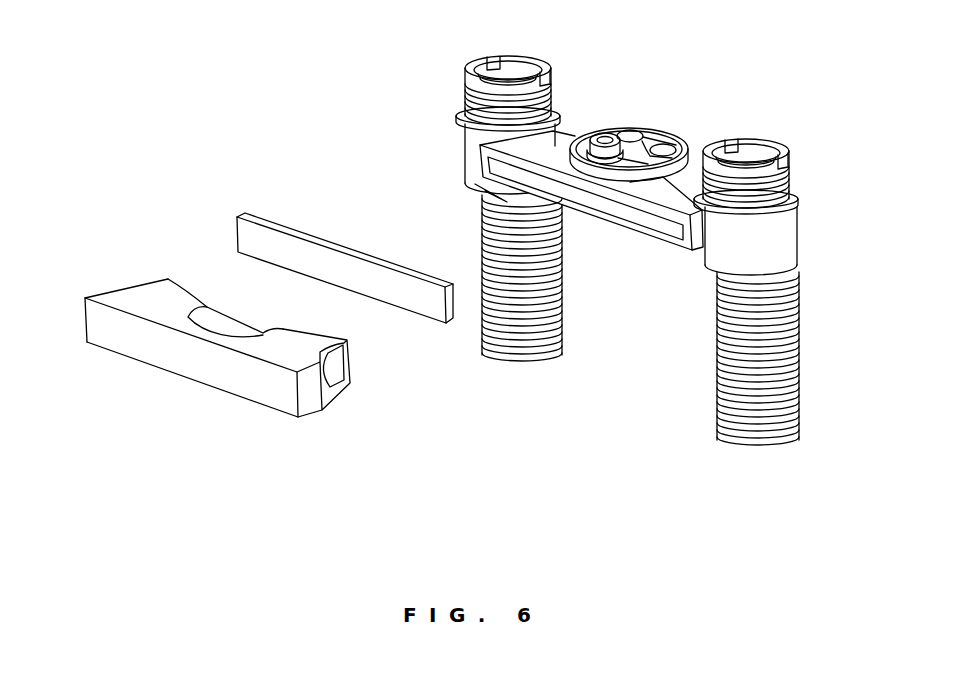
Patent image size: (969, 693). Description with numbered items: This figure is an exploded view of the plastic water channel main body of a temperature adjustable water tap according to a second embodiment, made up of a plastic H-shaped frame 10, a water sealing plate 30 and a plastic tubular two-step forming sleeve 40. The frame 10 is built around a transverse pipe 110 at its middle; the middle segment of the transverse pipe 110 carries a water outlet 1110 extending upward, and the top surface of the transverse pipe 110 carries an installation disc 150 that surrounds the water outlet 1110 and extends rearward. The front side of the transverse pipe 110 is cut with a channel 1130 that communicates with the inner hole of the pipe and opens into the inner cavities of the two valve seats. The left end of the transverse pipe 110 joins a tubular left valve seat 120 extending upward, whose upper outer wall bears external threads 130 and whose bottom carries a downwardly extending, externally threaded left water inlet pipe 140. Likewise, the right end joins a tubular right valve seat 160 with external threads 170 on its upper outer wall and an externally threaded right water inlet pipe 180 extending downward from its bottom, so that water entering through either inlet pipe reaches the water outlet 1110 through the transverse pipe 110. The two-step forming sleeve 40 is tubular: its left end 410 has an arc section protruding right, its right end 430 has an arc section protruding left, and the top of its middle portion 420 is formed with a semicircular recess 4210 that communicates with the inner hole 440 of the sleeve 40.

The H-shaped frame 10 is at (464, 117).
The water sealing plate 30 is at (319, 252).
The two-step forming sleeve 40 is at (119, 299).
The transverse pipe 110 is at (565, 143).
The left valve seat 120 is at (475, 157).
The external threads 130 is at (548, 77).
The left water inlet pipe 140 is at (505, 223).
The installation disc 150 is at (660, 135).
The right valve seat 160 is at (770, 237).
The external threads 170 is at (792, 182).
The right water inlet pipe 180 is at (757, 343).
The left end 410 is at (88, 315).
The middle portion 420 is at (198, 375).
The right end 430 is at (296, 361).
The inner hole 440 is at (344, 385).
The water outlet 1110 is at (595, 153).
The channel 1130 is at (652, 222).
The semicircular recess 4210 is at (187, 323).